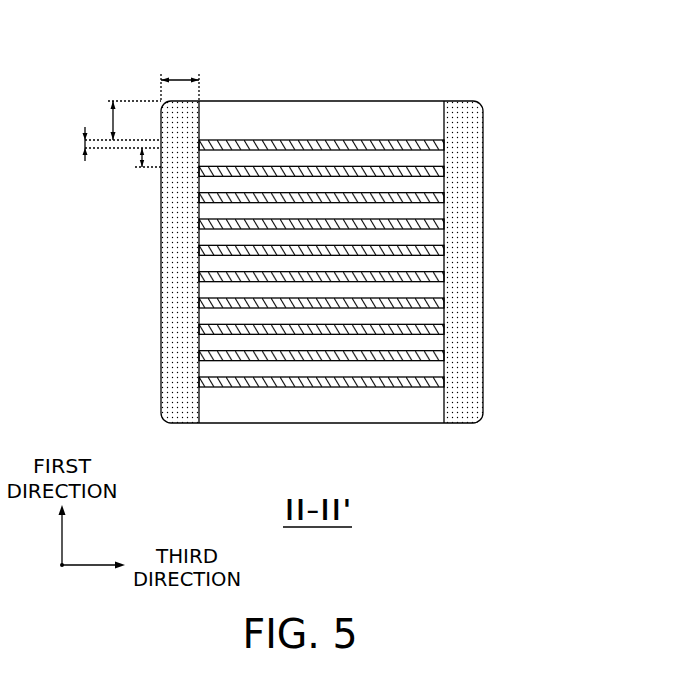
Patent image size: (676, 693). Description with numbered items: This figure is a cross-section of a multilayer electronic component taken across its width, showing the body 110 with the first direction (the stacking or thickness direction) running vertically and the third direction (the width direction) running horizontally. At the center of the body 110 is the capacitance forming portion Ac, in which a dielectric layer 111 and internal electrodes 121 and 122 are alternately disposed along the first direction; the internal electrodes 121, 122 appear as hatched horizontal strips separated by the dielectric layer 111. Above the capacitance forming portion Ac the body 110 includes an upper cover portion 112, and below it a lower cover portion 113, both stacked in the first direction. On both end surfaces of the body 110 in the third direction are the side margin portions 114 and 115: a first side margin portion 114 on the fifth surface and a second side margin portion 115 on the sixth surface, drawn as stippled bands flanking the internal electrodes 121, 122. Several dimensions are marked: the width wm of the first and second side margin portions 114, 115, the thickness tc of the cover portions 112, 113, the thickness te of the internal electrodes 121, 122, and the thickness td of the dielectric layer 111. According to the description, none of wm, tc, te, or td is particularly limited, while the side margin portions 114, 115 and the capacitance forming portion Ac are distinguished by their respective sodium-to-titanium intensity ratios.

The body 110 is at (328, 101).
The dielectric layer 111 is at (441, 183).
The upper cover portion 112 is at (252, 120).
The lower cover portion 113 is at (257, 403).
The first side margin portion 114 is at (165, 320).
The second side margin portion 115 is at (480, 237).
The first internal electrode 121 is at (384, 145).
The second internal electrode 122 is at (413, 177).
The capacitance forming portion Ac is at (190, 265).
The width of the side margin portions wm is at (180, 75).
The thickness of the cover portions tc is at (127, 120).
The thickness of the internal electrodes te is at (112, 144).
The thickness of the dielectric layer td is at (139, 160).